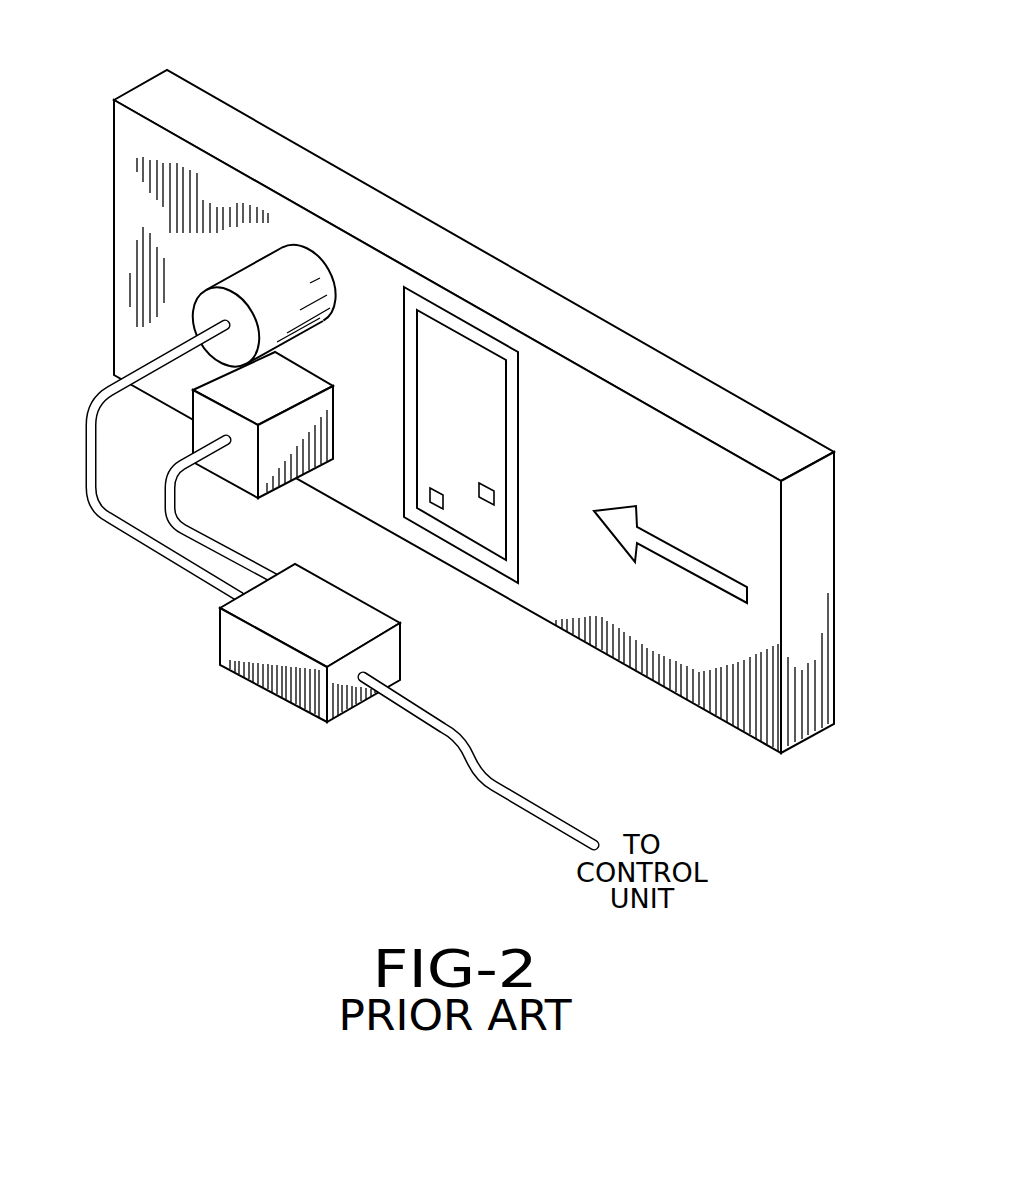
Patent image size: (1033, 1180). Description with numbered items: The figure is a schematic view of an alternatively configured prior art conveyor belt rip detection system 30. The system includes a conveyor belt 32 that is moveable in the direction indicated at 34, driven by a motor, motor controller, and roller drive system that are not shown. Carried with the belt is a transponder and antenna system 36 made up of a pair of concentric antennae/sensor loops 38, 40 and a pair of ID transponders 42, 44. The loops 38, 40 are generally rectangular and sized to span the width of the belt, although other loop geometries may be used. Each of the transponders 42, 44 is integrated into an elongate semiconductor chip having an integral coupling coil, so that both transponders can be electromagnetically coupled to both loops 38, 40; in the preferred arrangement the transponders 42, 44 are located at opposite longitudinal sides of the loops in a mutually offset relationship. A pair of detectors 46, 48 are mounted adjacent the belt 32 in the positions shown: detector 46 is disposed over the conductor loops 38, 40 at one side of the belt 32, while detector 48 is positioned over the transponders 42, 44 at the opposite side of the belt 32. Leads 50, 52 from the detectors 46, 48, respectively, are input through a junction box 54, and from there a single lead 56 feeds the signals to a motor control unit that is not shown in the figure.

The conveyor belt rip detection system 30 is at (474, 382).
The conveyor belt 32 is at (688, 378).
The direction of belt movement 34 is at (712, 566).
The transponder and antenna system 36 is at (507, 364).
The antenna/sensor loop 38 is at (499, 338).
The antenna/sensor loop 40 is at (508, 417).
The ID transponder 42 is at (435, 502).
The ID transponder 44 is at (488, 497).
The detector 46 is at (207, 300).
The detector 48 is at (305, 423).
The lead 50 is at (90, 468).
The lead 52 is at (213, 547).
The junction box 54 is at (280, 673).
The lead 56 is at (465, 748).